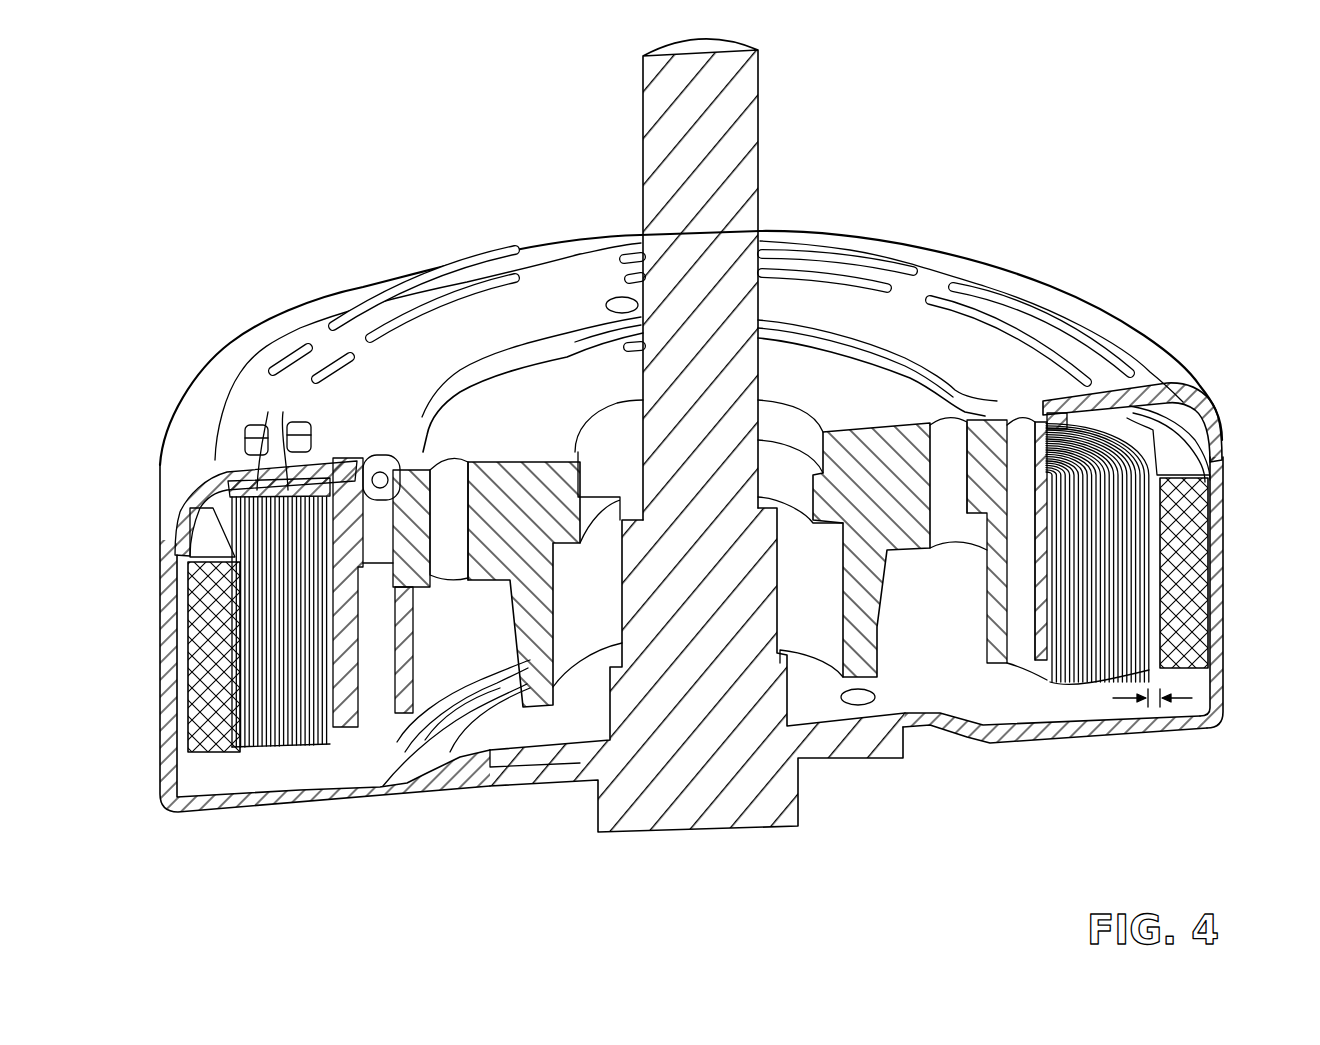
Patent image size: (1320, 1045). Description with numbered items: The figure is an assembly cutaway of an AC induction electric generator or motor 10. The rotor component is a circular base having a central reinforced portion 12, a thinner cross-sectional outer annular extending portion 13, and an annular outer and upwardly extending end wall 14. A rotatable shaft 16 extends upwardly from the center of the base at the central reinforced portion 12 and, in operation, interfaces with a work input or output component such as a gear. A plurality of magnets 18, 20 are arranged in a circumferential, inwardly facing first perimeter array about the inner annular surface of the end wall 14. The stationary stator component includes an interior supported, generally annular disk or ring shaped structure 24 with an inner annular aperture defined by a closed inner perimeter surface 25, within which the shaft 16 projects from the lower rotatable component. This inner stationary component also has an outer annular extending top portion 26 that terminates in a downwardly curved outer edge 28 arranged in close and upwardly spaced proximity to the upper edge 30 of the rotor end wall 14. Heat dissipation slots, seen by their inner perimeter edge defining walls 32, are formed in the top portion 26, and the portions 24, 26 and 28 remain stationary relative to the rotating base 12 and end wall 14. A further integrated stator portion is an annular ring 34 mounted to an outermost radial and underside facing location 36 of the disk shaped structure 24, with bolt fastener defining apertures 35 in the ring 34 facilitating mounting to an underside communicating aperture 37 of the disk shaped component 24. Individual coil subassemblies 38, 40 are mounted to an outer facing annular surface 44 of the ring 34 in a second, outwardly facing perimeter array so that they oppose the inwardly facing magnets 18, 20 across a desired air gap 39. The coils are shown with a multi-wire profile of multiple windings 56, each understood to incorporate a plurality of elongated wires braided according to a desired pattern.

The AC induction electric generator or motor 10 is at (1174, 214).
The central reinforced portion 12 is at (845, 748).
The outer annular extending portion 13 is at (1015, 750).
The end wall 14 is at (1225, 632).
The rotatable shaft 16 is at (640, 165).
The magnet 18 is at (1200, 507).
The magnet 20 is at (1135, 412).
The annular shaped structure 24 is at (502, 470).
The inner perimeter surface 25 is at (780, 462).
The top portion 26 is at (420, 328).
The downwardly curved outer edge 28 is at (175, 462).
The upper edge 30 is at (178, 555).
The inner perimeter edge defining walls 32 is at (1005, 302).
The annular ring 34 is at (385, 705).
The bolt fastener defining apertures 35 is at (393, 683).
The outermost radial and underside facing location 36 is at (393, 567).
The underside communicating aperture 37 is at (378, 478).
The coil subassembly 38 is at (1097, 680).
The air gap 39 is at (1187, 700).
The coil subassembly 40 is at (1060, 405).
The outer facing annular surface 44 is at (333, 707).
The windings 56 is at (278, 438).